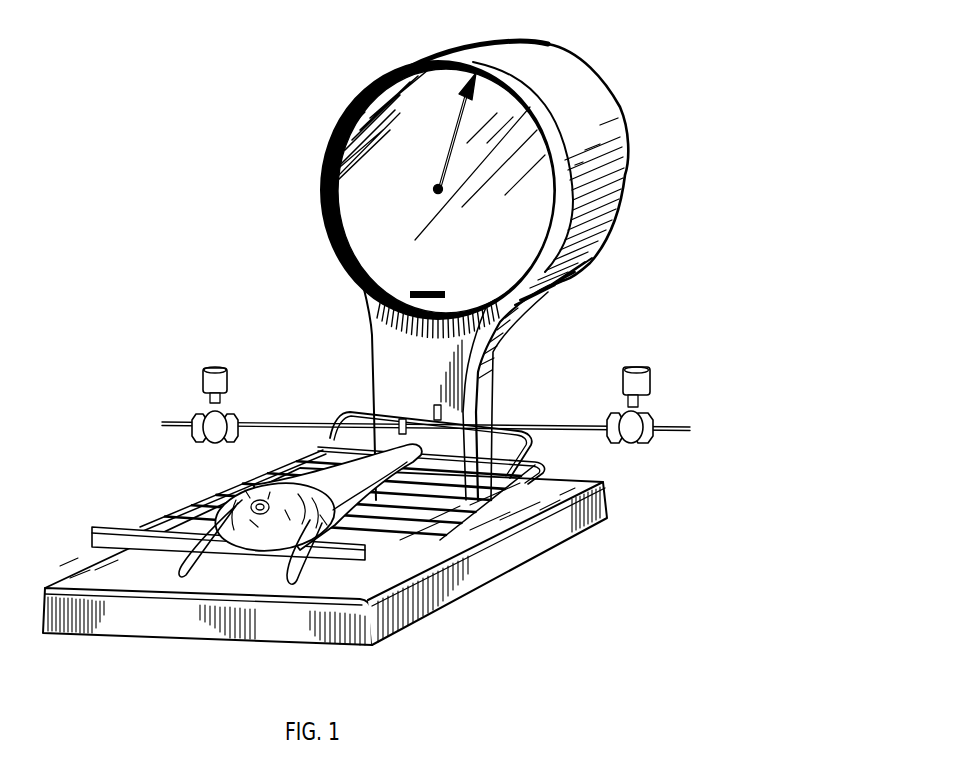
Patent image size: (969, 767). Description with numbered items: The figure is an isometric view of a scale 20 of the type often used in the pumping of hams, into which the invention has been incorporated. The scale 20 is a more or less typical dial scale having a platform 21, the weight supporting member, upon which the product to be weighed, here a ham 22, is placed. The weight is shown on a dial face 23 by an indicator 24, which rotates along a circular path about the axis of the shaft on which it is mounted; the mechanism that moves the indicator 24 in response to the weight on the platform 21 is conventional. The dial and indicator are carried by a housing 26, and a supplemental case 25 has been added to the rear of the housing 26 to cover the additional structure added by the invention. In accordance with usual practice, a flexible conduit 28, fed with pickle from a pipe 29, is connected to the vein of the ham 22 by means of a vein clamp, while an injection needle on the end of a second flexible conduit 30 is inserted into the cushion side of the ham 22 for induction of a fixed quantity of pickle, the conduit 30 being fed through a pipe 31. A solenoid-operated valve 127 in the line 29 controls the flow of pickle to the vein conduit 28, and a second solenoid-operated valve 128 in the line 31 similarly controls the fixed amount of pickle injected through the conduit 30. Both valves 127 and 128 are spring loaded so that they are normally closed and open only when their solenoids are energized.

The scale 20 is at (496, 352).
The platform 21 is at (610, 512).
The ham 22 is at (270, 478).
The dial face 23 is at (363, 250).
The indicator 24 is at (465, 80).
The supplemental case 25 is at (603, 110).
The housing 26 is at (547, 248).
The flexible conduit 28 is at (181, 578).
The pipe 29 is at (541, 425).
The second flexible conduit 30 is at (290, 583).
The pipe 31 is at (292, 422).
The solenoid-operated valve 127 is at (653, 415).
The second solenoid-operated valve 128 is at (231, 415).